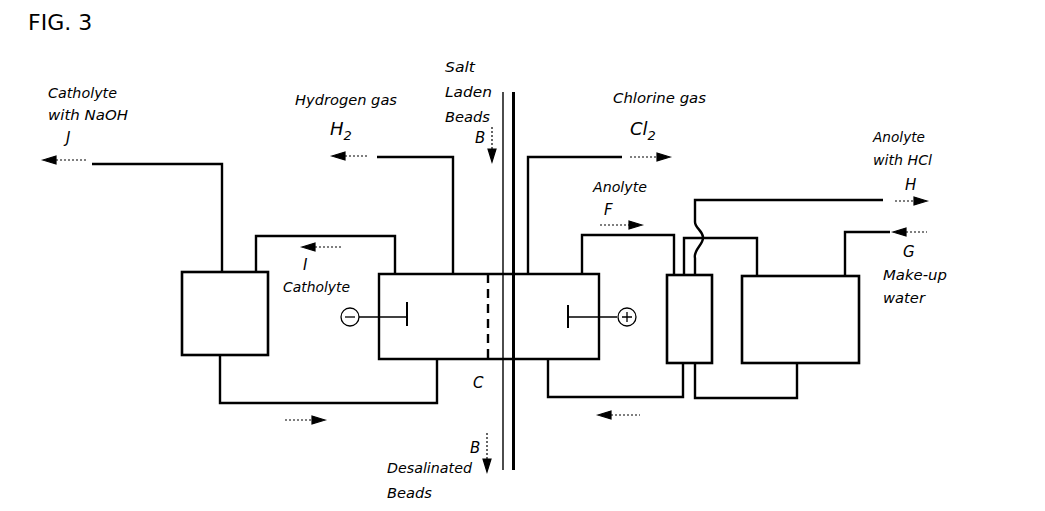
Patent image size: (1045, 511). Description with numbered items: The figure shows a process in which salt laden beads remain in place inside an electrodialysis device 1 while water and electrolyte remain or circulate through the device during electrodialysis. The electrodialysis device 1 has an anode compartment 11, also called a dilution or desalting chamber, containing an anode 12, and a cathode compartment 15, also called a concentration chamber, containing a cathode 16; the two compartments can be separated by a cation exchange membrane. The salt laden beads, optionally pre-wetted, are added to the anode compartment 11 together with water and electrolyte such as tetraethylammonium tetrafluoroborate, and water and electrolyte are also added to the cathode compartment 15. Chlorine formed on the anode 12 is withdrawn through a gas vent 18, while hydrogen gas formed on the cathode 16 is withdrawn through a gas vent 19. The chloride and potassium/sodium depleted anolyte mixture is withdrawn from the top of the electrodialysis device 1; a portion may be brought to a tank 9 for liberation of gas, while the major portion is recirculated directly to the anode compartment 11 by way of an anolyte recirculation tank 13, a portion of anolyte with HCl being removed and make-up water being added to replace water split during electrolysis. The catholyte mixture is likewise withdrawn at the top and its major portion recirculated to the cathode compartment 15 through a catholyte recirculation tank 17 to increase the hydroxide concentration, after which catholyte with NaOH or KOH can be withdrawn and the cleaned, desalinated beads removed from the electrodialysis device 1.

The electrodialysis device 1 is at (473, 272).
The tank 9 is at (812, 332).
The anode compartment 11 is at (595, 337).
The anode 12 is at (572, 327).
The anolyte recirculation tank 13 is at (698, 332).
The cathode compartment 15 is at (485, 355).
The cathode 16 is at (407, 326).
The catholyte recirculation tank 17 is at (232, 332).
The gas vent 18 is at (553, 155).
The gas vent 19 is at (427, 155).